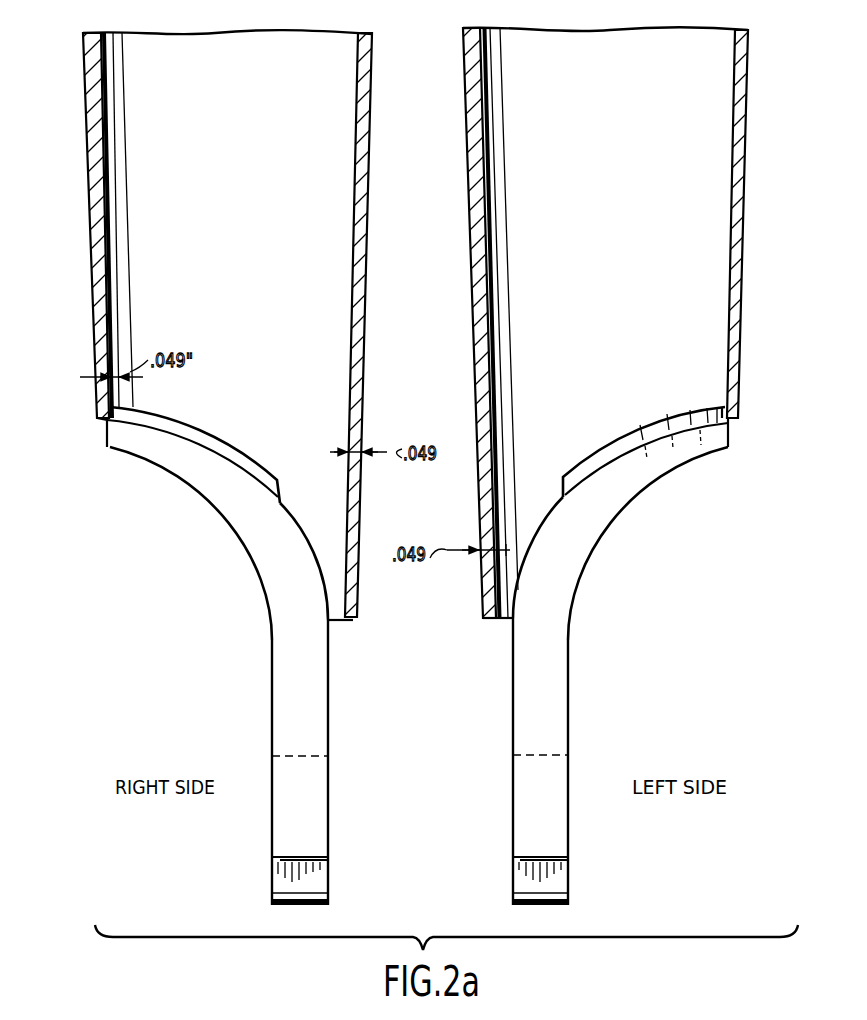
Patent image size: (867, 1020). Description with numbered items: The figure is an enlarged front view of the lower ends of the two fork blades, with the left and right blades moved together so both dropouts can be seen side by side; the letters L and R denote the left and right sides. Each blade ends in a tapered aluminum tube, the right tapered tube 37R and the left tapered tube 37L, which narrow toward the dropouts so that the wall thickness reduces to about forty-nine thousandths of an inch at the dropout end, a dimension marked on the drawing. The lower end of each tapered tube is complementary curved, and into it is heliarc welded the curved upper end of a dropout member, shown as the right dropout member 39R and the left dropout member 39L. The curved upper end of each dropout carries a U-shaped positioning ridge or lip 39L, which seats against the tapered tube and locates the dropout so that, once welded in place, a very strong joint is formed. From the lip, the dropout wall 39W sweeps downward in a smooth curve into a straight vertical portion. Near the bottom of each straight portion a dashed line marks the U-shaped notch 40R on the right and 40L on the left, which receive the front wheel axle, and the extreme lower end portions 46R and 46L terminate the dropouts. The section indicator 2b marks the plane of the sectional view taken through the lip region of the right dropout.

The tapered tube (right) 37R is at (137, 312).
The tapered tube (left) 37L is at (700, 305).
The dropout member (right) 39R is at (330, 658).
The U-shaped positioning ridge or lip 39L is at (185, 418).
The wall of dropout member 39W is at (307, 545).
The U-shaped notch (right) 40R is at (328, 742).
The U-shaped notch (left) 40L is at (513, 743).
The lower end portion of right dropout 46R is at (318, 870).
The lower end portion of left dropout 46L is at (520, 873).
The section line for FIG. 2b is at (223, 430).